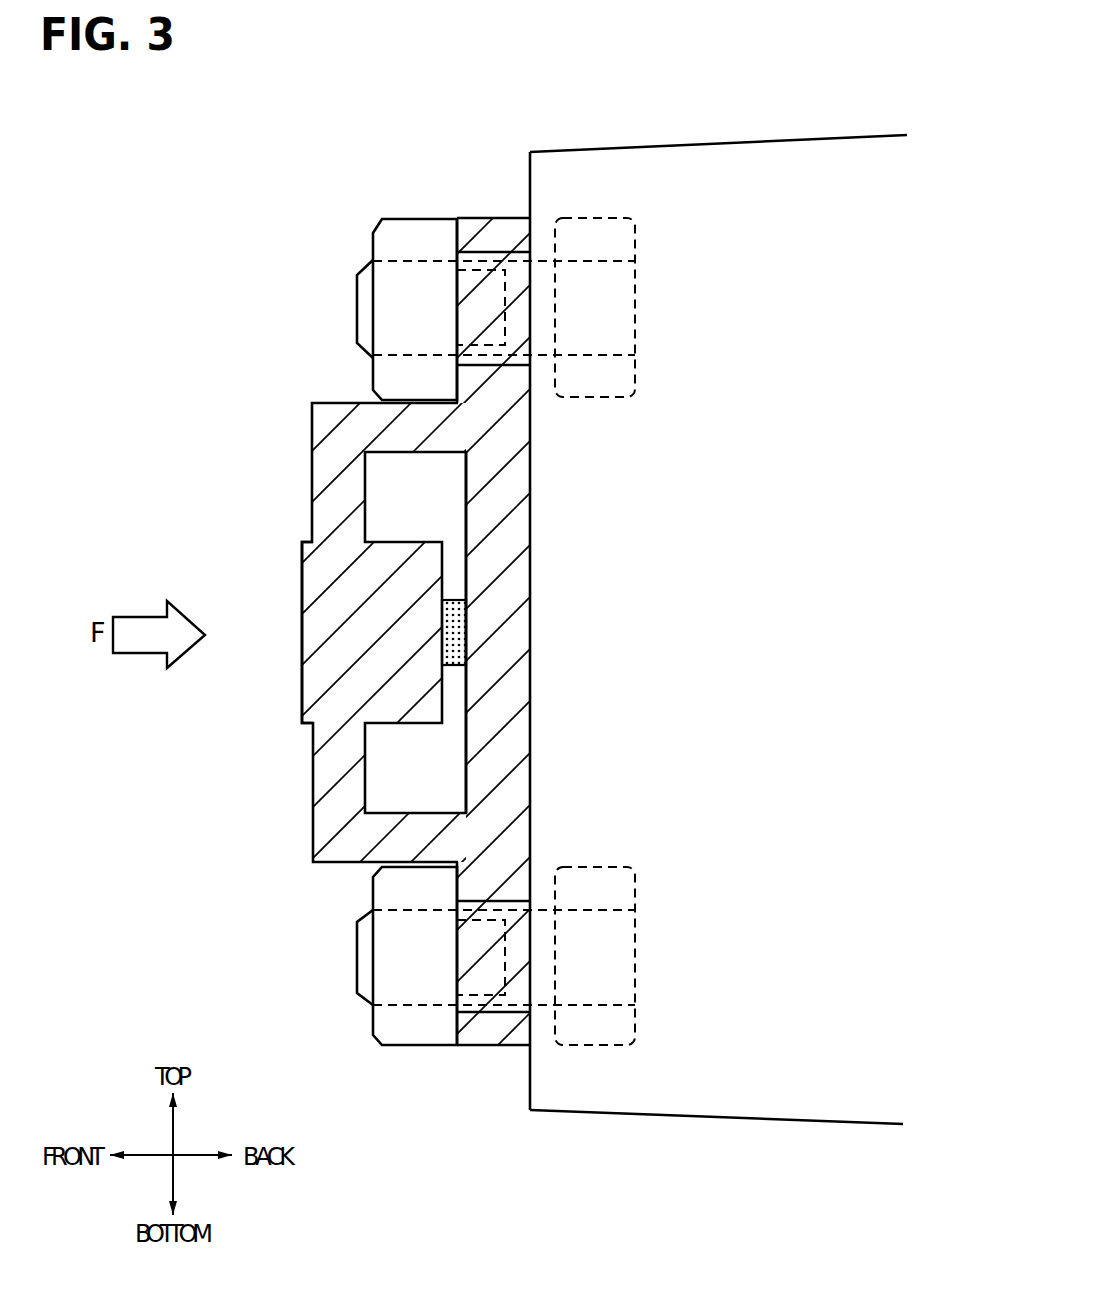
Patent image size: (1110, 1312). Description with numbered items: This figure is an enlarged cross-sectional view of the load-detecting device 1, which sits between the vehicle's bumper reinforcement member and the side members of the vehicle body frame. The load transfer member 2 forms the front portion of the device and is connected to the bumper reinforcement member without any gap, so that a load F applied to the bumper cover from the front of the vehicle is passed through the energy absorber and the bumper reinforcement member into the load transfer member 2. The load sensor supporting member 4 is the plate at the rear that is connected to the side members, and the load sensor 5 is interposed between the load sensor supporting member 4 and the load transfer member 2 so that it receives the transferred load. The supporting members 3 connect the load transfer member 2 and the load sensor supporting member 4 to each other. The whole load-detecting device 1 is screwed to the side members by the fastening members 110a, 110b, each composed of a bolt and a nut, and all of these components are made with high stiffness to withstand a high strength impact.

The load-detecting device 1 is at (347, 392).
The load transfer member 2 is at (322, 619).
The supporting members 3 is at (407, 428).
The load sensor supporting member 4 is at (497, 707).
The load sensor 5 is at (463, 630).
The fastening member 110a is at (418, 228).
The fastening member 110b is at (420, 1040).